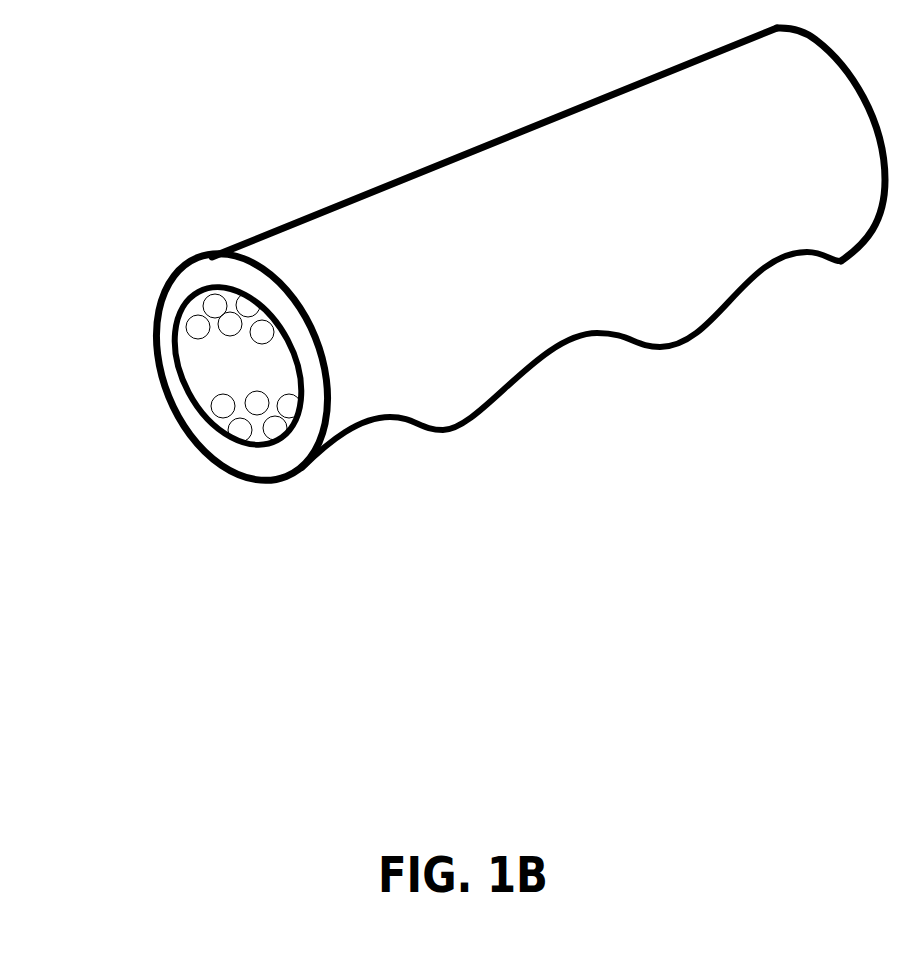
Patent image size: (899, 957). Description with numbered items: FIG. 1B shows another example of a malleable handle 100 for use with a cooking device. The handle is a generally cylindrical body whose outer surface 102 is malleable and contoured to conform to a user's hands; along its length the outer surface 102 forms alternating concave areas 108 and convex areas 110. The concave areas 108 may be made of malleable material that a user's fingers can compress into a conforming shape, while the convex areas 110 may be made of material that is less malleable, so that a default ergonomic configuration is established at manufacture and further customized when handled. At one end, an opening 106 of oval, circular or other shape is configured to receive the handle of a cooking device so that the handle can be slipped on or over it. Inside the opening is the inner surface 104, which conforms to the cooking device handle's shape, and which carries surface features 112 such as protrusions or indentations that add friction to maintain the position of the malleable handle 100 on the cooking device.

The malleable handle 100 is at (465, 311).
The outer surface 102 is at (457, 397).
The inner surface 104 is at (251, 380).
The opening 106 is at (202, 332).
The concave areas 108 is at (788, 282).
The convex areas 110 is at (683, 322).
The surface features 112 is at (240, 327).